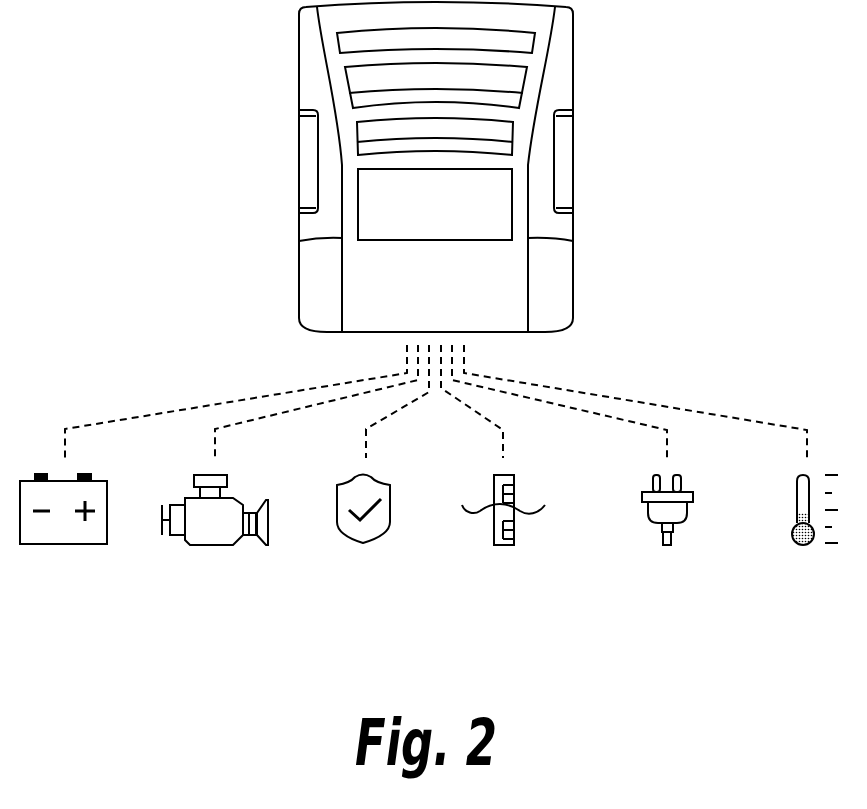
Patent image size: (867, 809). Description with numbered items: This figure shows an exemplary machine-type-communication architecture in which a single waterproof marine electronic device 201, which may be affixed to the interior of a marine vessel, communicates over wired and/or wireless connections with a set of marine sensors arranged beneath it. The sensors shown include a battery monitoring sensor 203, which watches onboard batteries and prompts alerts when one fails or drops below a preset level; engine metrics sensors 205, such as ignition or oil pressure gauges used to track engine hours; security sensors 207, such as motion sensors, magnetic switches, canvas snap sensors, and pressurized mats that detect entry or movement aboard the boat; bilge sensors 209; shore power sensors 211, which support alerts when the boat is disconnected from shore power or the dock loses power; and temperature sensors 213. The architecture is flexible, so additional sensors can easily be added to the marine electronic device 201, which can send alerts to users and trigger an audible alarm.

The waterproof marine electronic device 201 is at (415, 218).
The battery monitoring sensor 203 is at (41, 581).
The engine metrics sensors 205 is at (194, 581).
The security sensors 207 is at (346, 581).
The bilge sensors 209 is at (484, 581).
The shore power sensors 211 is at (647, 581).
The temperature sensors 213 is at (792, 581).